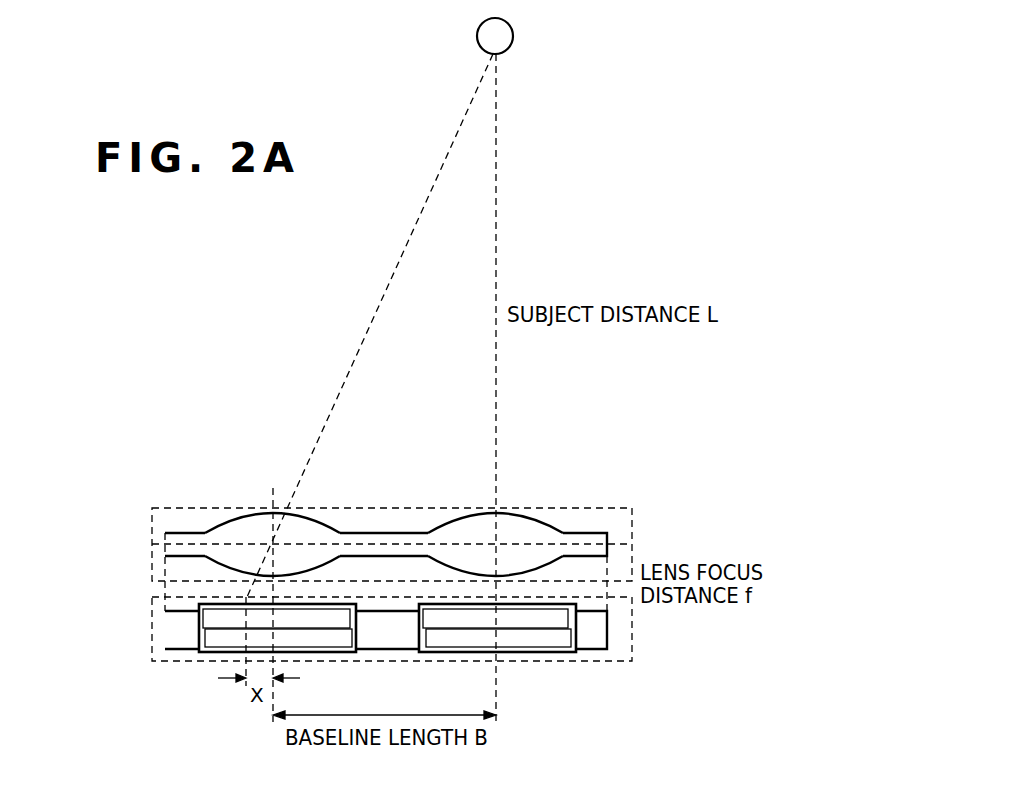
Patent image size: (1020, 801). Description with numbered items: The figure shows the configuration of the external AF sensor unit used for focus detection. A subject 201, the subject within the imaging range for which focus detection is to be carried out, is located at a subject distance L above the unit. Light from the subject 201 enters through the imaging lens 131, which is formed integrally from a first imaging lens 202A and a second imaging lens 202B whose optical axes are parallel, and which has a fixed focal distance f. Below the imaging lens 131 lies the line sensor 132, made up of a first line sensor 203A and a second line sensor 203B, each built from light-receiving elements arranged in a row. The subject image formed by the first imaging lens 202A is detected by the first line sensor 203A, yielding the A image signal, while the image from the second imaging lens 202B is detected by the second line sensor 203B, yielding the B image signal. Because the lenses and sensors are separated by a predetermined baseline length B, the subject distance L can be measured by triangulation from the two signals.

The subject 201 is at (513, 34).
The imaging lens 131 is at (152, 514).
The line sensor 132 is at (152, 658).
The first imaging lens 202A is at (320, 520).
The second imaging lens 202B is at (543, 522).
The first line sensor 203A is at (345, 652).
The second line sensor 203B is at (565, 652).